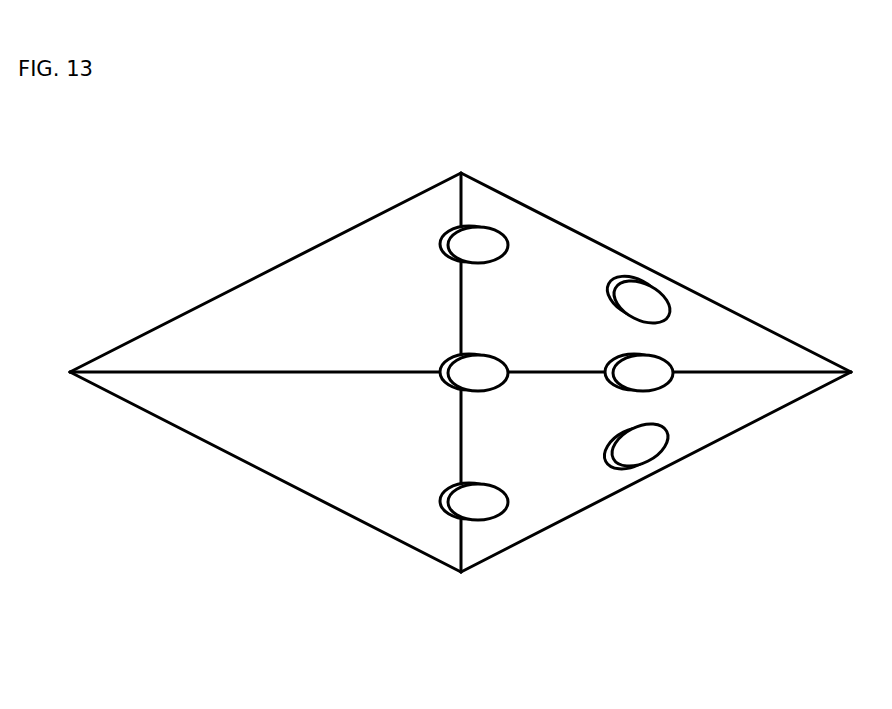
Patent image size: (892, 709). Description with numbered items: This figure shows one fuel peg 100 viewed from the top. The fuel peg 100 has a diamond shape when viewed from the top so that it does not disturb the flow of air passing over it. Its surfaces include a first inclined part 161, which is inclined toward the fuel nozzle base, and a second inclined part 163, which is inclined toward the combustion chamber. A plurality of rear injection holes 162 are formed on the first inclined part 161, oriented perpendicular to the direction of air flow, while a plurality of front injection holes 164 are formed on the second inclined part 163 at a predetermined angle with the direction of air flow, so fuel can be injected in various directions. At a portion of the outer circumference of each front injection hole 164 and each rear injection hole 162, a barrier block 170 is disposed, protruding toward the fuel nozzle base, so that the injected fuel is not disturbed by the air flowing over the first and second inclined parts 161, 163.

The fuel peg 100 is at (202, 148).
The first inclined part 161 is at (210, 407).
The rear injection hole 162 is at (488, 503).
The second inclined part 163 is at (560, 493).
The front injection hole 164 is at (650, 442).
The barrier block 170 is at (445, 508).